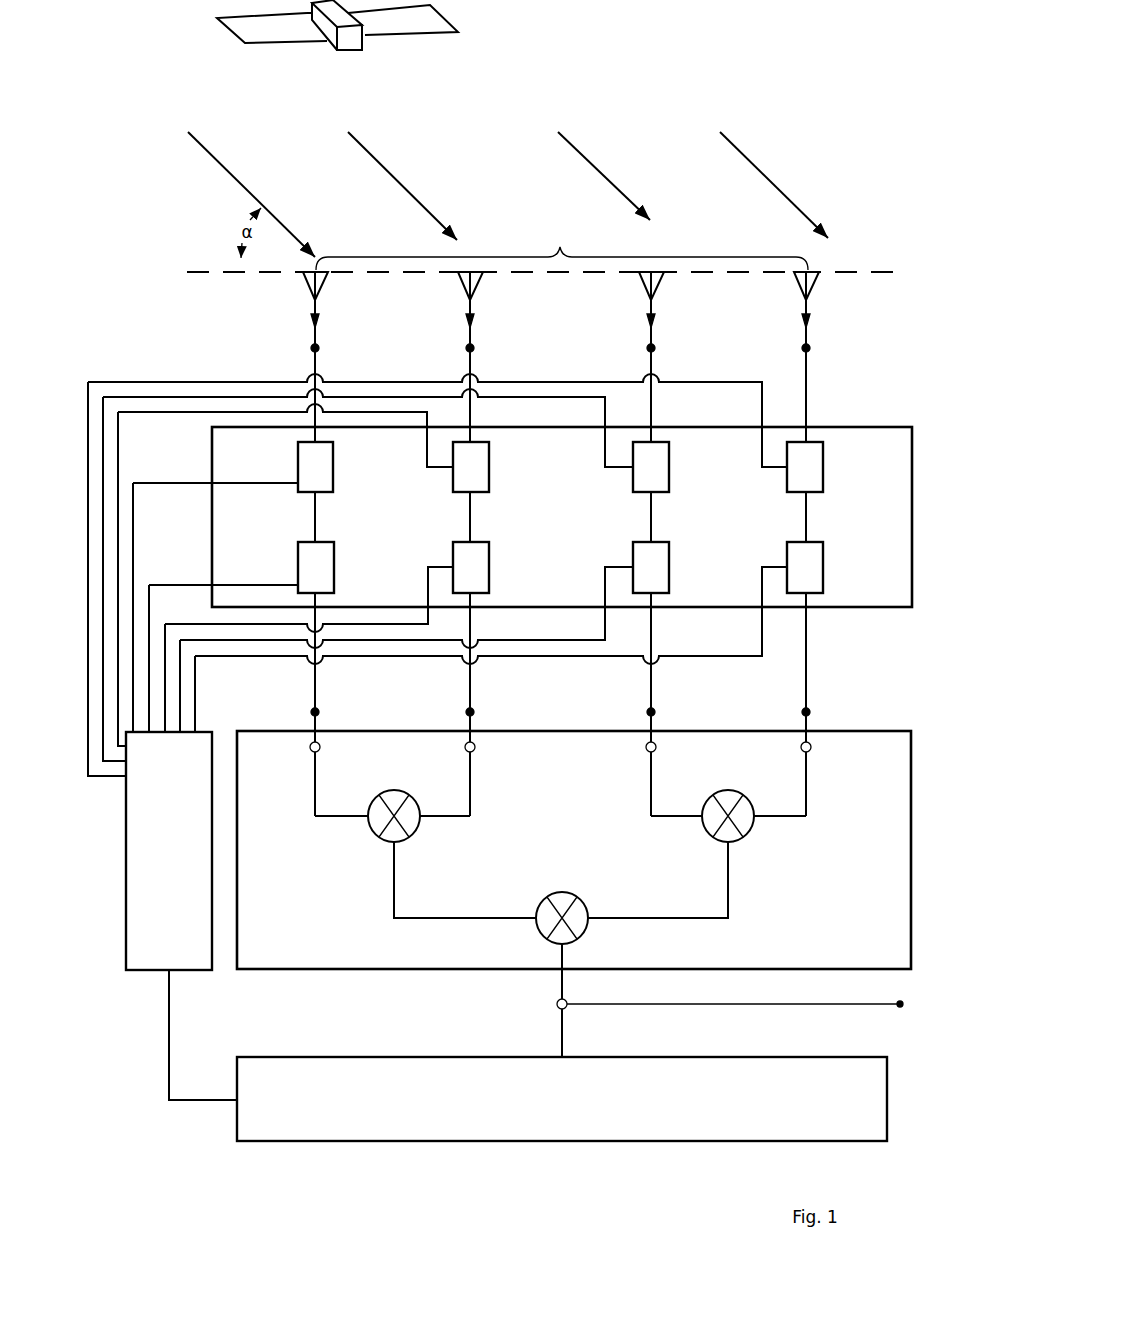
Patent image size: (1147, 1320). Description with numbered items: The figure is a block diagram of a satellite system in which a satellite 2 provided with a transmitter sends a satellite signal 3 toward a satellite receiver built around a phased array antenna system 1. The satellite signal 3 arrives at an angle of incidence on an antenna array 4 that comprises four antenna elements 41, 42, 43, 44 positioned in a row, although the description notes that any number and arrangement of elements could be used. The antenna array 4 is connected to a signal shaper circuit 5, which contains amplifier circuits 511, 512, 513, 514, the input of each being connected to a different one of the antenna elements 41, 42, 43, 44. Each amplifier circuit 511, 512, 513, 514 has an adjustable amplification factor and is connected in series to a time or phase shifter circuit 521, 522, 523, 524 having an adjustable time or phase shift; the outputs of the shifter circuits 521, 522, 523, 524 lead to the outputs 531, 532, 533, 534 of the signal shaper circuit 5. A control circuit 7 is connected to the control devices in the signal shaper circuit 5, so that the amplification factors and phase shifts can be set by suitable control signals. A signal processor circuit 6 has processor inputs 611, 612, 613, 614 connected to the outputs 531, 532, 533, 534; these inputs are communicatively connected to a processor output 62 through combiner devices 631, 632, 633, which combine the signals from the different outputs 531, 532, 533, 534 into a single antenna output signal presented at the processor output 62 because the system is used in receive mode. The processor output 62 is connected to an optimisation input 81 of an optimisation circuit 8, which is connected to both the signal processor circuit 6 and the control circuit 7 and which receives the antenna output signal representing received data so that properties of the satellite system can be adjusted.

The phased array antenna system 1 is at (212, 1116).
The satellite 2 is at (277, 30).
The satellite signal 3 is at (203, 143).
The antenna array 4 is at (546, 247).
The antenna element 41 is at (319, 307).
The antenna element 42 is at (474, 307).
The antenna element 43 is at (655, 307).
The antenna element 44 is at (810, 307).
The signal shaper circuit 5 is at (885, 427).
The amplifier circuit 511 is at (298, 455).
The amplifier circuit 512 is at (489, 455).
The amplifier circuit 513 is at (669, 485).
The amplifier circuit 514 is at (823, 485).
The time or phase shifter circuit 521 is at (298, 555).
The time or phase shifter circuit 522 is at (489, 582).
The time or phase shifter circuit 523 is at (669, 582).
The time or phase shifter circuit 524 is at (823, 582).
The output of the signal shaper circuit 531 is at (312, 710).
The output of the signal shaper circuit 532 is at (467, 710).
The output of the signal shaper circuit 533 is at (648, 710).
The output of the signal shaper circuit 534 is at (803, 710).
The signal processor circuit 6 is at (885, 731).
The processor input 611 is at (310, 750).
The processor input 612 is at (476, 750).
The processor input 613 is at (646, 750).
The processor input 614 is at (811, 750).
The combiner device 631 is at (394, 790).
The combiner device 632 is at (728, 790).
The combiner device 633 is at (562, 892).
The processor output 62 is at (556, 972).
The control circuit 7 is at (126, 927).
The optimisation circuit 8 is at (275, 1057).
The optimisation input 81 is at (556, 1055).